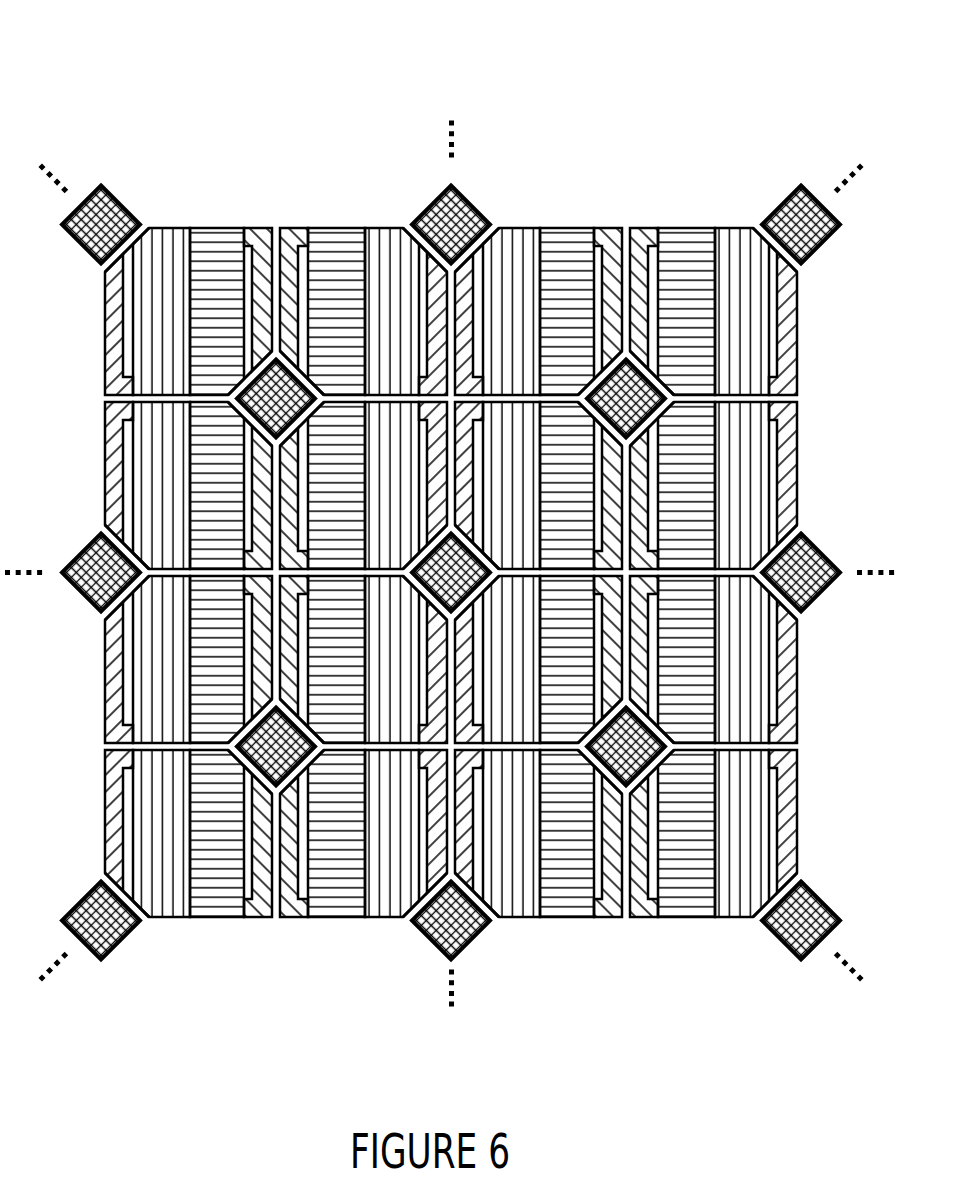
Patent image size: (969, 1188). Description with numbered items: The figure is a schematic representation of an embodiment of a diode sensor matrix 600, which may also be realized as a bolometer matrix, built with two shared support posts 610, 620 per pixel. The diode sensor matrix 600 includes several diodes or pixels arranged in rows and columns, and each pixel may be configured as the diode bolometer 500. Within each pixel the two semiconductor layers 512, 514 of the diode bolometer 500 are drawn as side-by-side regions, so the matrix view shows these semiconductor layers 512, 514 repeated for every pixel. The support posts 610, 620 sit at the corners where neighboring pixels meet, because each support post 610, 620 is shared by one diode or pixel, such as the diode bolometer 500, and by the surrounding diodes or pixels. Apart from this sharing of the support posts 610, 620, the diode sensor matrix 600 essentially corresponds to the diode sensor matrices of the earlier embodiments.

The diode sensor matrix 600 is at (68, 44).
The diode bolometer 500 is at (371, 396).
The semiconductor layer 512 is at (325, 488).
The semiconductor layer 514 is at (403, 490).
The shared support post 610 is at (247, 383).
The shared support post 620 is at (427, 587).